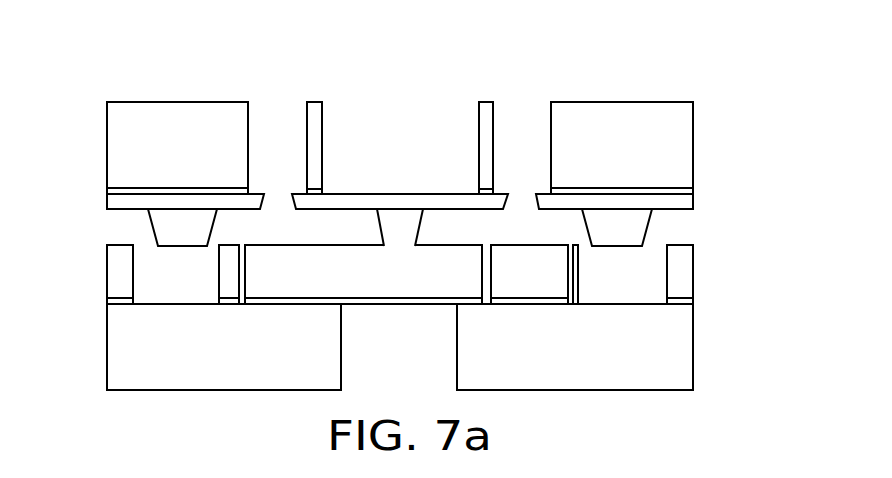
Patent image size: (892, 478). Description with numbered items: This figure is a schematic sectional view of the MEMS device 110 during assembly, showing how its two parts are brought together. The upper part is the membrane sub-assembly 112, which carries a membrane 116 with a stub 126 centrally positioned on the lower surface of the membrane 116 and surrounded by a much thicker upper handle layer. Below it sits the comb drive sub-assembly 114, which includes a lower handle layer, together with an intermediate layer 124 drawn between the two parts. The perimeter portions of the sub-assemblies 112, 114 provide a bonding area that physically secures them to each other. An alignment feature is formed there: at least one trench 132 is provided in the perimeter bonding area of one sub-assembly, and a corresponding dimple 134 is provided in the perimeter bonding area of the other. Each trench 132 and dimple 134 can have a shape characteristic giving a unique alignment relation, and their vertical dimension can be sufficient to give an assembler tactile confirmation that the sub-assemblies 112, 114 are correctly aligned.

The MEMS device 110 is at (424, 210).
The membrane sub-assembly 112 is at (715, 152).
The comb drive sub-assembly 114 is at (717, 372).
The membrane 116 is at (395, 194).
The intermediate layer 124 is at (417, 304).
The stub 126 is at (399, 230).
The trench 132 is at (152, 285).
The dimple 134 is at (167, 230).